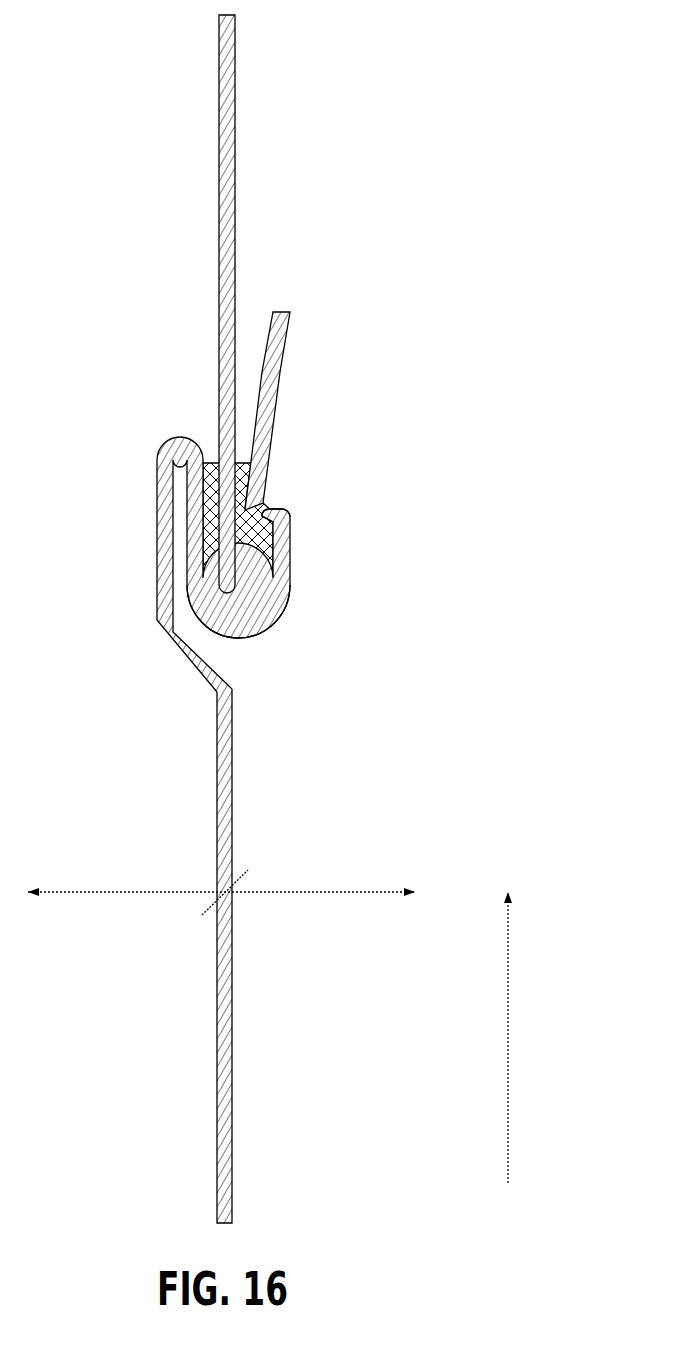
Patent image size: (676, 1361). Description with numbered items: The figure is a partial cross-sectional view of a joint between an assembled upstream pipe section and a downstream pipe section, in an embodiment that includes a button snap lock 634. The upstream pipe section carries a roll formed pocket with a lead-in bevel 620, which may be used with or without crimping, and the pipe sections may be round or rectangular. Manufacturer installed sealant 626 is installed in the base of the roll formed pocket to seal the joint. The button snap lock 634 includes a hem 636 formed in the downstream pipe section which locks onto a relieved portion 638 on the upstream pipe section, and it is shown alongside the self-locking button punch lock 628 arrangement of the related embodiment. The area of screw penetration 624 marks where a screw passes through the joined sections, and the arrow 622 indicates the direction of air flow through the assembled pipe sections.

The lead-in bevel 620 is at (295, 333).
The arrow 622 is at (508, 1050).
The area of screw penetration 624 is at (200, 963).
The manufacturer installed sealant 626 is at (140, 540).
The self-locking button punch lock 628 is at (205, 192).
The button snap lock 634 is at (282, 495).
The hem 636 is at (247, 640).
The relieved portion 638 is at (290, 518).